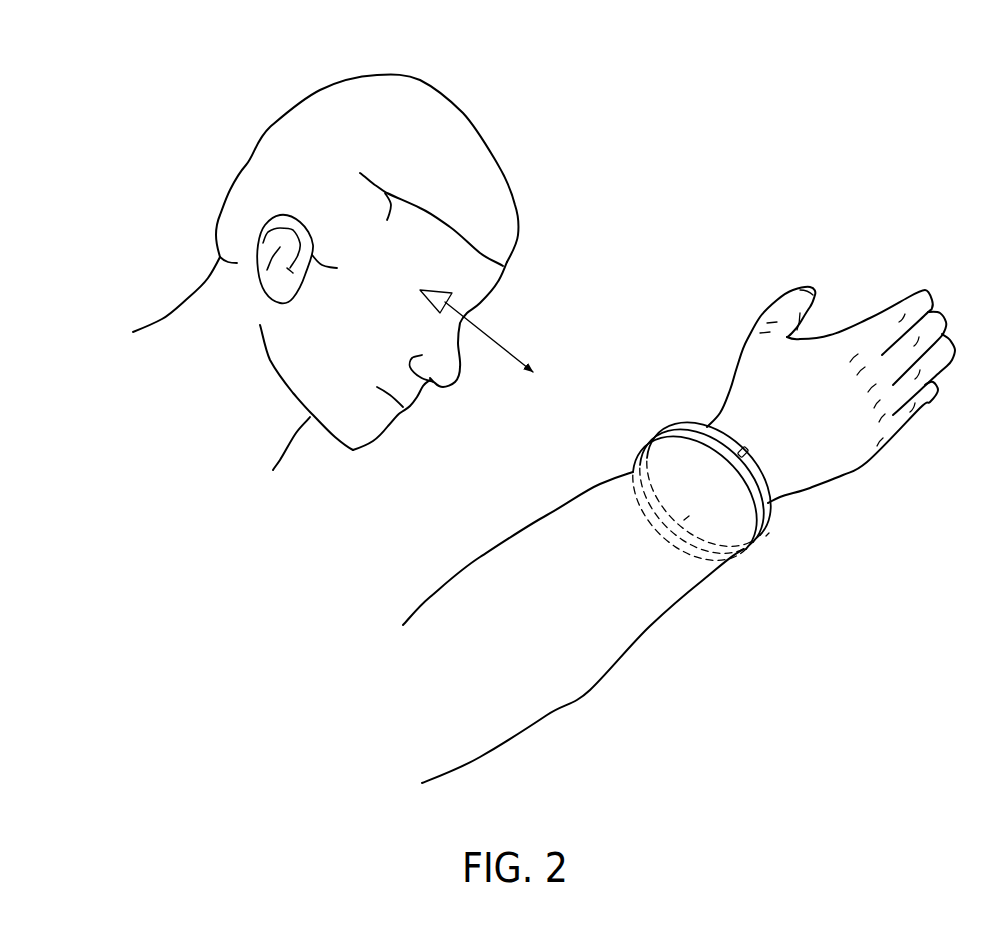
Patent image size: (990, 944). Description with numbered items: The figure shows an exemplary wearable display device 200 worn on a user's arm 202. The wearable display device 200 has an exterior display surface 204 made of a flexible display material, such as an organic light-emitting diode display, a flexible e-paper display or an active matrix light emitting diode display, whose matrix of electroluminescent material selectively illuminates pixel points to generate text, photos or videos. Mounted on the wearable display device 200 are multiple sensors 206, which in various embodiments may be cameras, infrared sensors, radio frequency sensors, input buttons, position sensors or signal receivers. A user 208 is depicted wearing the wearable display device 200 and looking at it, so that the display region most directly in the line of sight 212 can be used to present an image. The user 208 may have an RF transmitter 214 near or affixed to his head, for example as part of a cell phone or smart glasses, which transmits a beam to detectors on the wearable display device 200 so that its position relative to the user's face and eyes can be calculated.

The wearable display device 200 is at (685, 481).
The user's arm 202 is at (583, 695).
The exterior display surface 204 is at (742, 488).
The sensors 206 is at (722, 481).
The user 208 is at (326, 264).
The line of sight 212 is at (504, 312).
The RF transmitter 214 is at (445, 149).